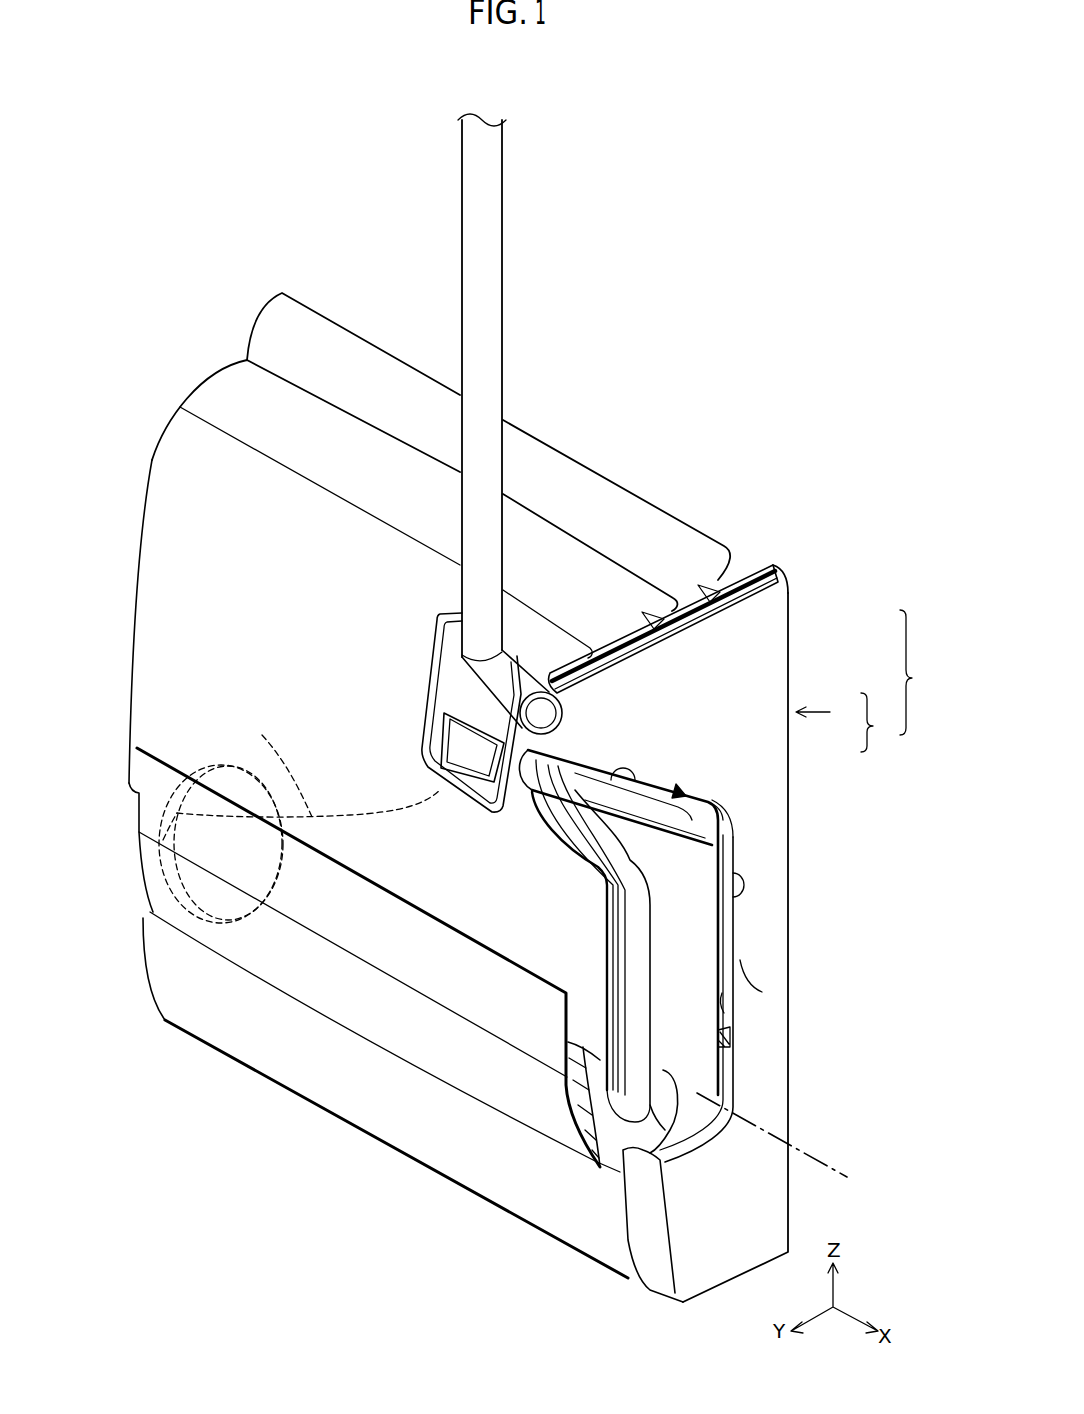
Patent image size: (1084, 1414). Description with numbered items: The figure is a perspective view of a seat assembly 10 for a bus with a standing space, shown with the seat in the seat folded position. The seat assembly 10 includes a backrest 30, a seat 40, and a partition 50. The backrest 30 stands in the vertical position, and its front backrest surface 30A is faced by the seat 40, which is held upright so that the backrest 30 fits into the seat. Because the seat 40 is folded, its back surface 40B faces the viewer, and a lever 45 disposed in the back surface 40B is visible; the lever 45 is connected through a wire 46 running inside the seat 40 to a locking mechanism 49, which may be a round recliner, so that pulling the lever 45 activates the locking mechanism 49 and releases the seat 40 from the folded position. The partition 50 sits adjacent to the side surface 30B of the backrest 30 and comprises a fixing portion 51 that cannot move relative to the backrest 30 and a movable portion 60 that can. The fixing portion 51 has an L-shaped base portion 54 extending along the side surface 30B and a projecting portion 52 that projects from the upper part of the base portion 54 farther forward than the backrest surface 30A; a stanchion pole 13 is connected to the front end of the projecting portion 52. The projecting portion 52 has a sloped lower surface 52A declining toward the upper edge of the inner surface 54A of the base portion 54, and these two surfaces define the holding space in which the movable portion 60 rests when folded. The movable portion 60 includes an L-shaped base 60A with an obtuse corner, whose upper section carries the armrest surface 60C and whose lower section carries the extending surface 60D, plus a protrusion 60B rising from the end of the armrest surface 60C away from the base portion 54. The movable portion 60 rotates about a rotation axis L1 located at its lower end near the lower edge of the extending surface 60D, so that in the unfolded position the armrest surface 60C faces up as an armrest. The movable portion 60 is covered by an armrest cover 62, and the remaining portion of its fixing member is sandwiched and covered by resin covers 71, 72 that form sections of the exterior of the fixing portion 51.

The seat assembly 10 is at (923, 672).
The stanchion pole 13 is at (494, 200).
The backrest 30 is at (705, 588).
The backrest surface 30A is at (367, 412).
The side surface 30B is at (721, 545).
The seat 40 is at (687, 615).
The back surface 40B is at (160, 520).
The lever 45 is at (440, 737).
The wire 46 is at (262, 735).
The locking mechanism 49 is at (187, 897).
The partition 50 is at (881, 722).
The fixing portion 51 is at (828, 714).
The projecting portion 52 is at (628, 684).
The lower surface 52A is at (721, 817).
The base portion 54 is at (762, 992).
The inner surface 54A is at (722, 993).
The movable portion 60 is at (680, 790).
The base 60A is at (690, 886).
The protrusion 60B is at (543, 763).
The armrest surface 60C is at (633, 860).
The extending surface 60D is at (717, 938).
The armrest cover 62 is at (722, 1042).
The resin cover 71 is at (750, 563).
The resin cover 72 is at (772, 587).
The rotation axis L1 is at (823, 1160).